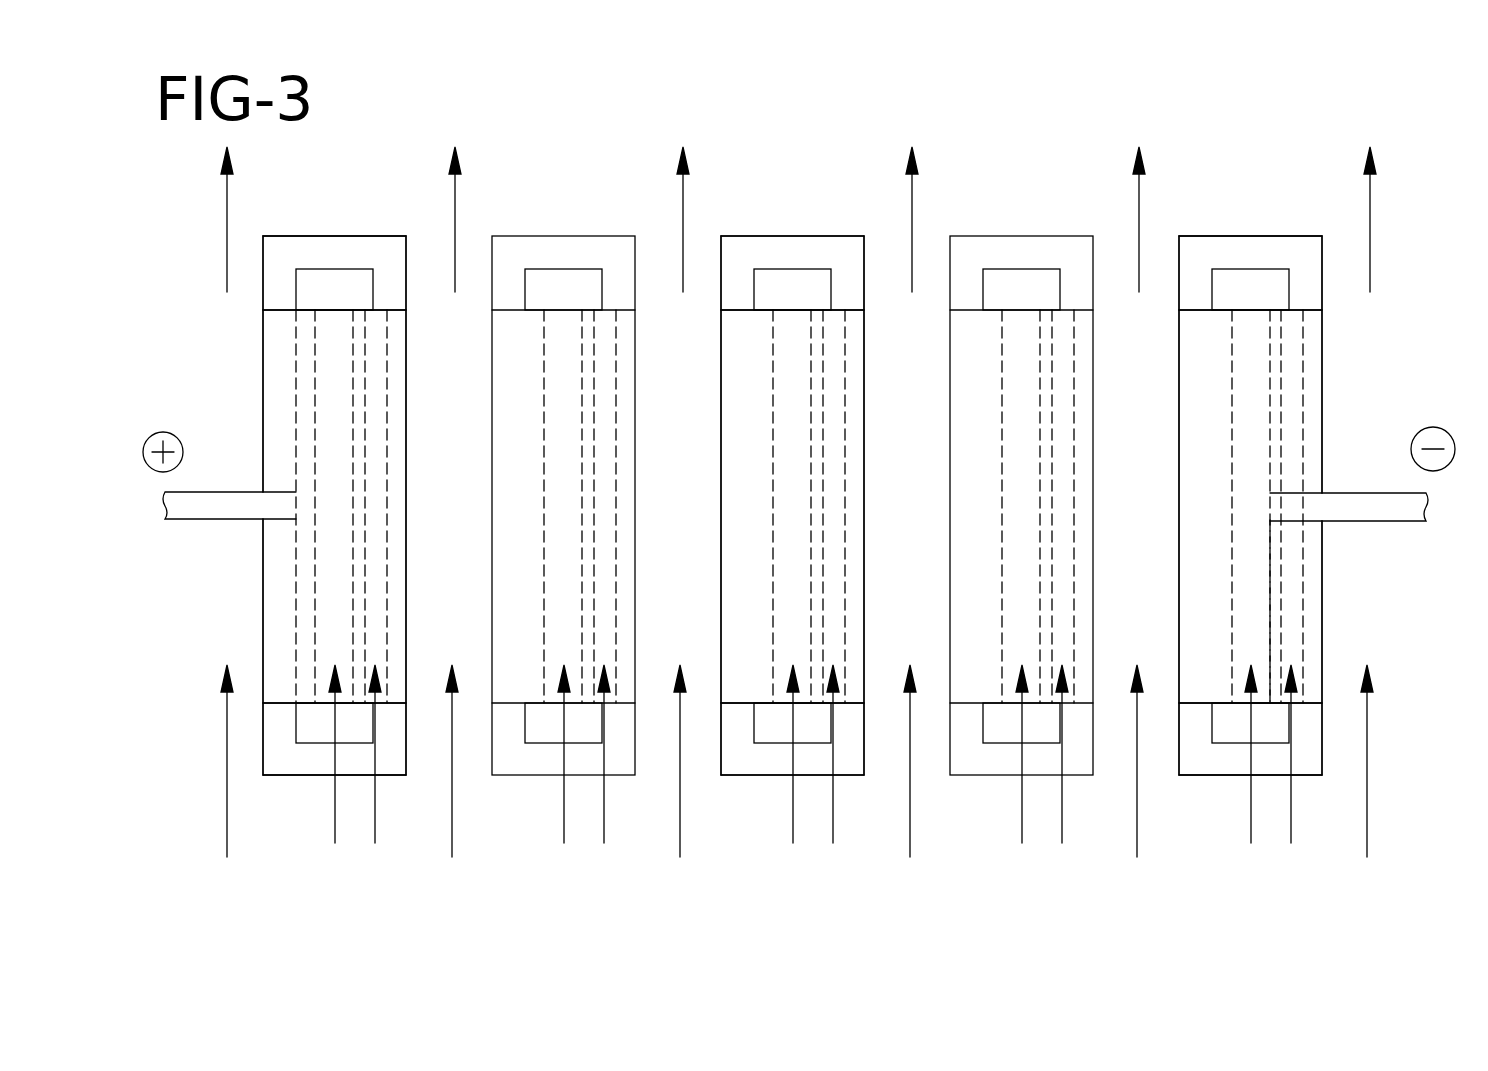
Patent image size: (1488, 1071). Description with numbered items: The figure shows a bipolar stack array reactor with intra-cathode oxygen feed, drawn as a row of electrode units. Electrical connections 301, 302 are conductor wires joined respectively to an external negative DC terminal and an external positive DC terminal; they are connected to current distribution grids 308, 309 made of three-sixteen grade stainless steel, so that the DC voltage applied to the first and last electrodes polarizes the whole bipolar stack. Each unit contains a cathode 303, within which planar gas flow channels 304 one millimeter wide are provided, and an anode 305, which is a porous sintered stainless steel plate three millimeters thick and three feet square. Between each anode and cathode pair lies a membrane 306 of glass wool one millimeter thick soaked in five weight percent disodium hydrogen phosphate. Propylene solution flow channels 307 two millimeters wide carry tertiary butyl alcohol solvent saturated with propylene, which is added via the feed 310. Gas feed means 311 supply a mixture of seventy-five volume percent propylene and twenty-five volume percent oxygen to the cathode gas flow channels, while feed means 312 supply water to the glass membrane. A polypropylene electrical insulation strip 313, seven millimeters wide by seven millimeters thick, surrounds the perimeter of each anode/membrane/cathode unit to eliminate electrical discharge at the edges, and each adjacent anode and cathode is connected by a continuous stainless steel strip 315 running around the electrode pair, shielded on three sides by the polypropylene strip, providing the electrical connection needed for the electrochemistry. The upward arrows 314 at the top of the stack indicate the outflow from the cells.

The electrical connection 301 is at (1353, 523).
The electrical connection 302 is at (230, 519).
The cathode 303 is at (407, 463).
The planar gas flow channel 304 is at (602, 363).
The anode 305 is at (263, 360).
The membrane 306 is at (563, 550).
The propylene solution flow channel 307 is at (657, 267).
The current distribution grid 308 is at (1270, 586).
The current distribution grid 309 is at (296, 575).
The propylene solution feed 310 is at (226, 792).
The gas feed means 311 is at (376, 835).
The feed means 312 is at (335, 828).
The polypropylene electrical insulation strip 313 is at (305, 245).
The gas outlet flow 314 is at (226, 220).
The stainless steel strip 315 is at (343, 277).